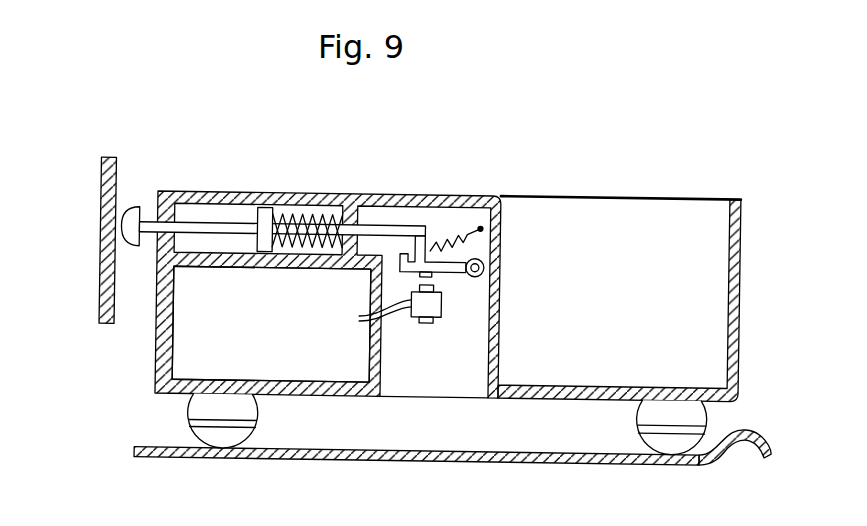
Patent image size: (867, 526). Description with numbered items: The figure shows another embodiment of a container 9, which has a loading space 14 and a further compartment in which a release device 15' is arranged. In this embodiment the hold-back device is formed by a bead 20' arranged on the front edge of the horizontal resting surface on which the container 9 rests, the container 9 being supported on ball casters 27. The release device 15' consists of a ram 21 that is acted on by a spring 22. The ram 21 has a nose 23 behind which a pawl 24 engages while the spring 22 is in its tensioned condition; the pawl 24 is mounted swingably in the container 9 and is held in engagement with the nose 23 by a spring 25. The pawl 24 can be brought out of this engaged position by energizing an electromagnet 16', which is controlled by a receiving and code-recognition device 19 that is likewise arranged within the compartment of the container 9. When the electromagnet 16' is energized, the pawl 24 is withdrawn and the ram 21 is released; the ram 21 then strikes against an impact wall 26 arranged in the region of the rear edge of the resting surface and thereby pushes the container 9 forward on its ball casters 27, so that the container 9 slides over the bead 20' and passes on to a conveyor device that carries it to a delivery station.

The container 9 is at (383, 188).
The loading space 14 is at (625, 221).
The release device 15' is at (454, 159).
The electromagnet 16' is at (400, 355).
The receiving and code-recognition device 19 is at (328, 345).
The bead 20' is at (734, 477).
The ram 21 is at (208, 221).
The spring 22 is at (293, 213).
The nose 23 is at (413, 246).
The pawl 24 is at (450, 272).
The spring 25 is at (480, 224).
The impact wall 26 is at (100, 248).
The ball casters 27 is at (215, 436).